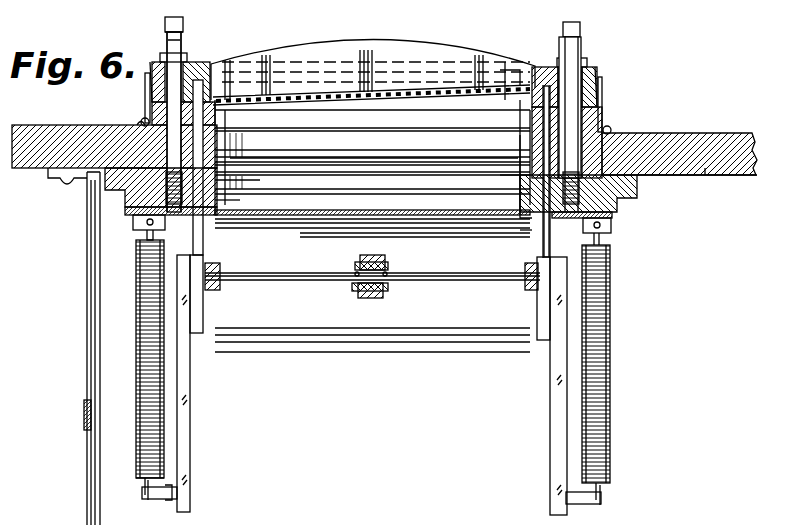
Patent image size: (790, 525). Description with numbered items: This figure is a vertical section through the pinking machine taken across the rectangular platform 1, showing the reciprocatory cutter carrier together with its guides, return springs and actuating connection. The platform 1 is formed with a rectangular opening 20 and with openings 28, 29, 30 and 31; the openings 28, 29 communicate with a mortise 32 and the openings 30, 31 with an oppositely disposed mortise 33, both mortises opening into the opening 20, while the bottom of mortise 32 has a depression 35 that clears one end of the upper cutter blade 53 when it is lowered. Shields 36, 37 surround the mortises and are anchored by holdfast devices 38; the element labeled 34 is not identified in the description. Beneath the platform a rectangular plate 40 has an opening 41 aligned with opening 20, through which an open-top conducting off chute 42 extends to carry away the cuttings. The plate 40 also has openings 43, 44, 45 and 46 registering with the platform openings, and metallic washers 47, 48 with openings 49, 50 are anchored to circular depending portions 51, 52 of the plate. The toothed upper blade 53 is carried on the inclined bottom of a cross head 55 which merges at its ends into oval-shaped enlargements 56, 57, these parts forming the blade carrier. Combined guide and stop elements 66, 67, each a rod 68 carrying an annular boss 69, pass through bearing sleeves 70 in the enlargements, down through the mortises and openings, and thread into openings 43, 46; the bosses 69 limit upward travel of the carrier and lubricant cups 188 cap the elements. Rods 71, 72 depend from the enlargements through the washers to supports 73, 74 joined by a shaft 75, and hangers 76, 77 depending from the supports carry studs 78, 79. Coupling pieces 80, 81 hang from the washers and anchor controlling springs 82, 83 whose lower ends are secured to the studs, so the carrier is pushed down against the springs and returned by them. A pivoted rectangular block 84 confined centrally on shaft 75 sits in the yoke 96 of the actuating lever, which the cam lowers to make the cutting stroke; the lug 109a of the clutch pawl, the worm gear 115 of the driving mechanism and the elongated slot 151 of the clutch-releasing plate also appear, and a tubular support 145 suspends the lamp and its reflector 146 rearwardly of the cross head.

The platform 1 is at (704, 180).
The rectangular opening 20 is at (470, 138).
The opening 28 is at (150, 128).
The opening 29 is at (372, 141).
The opening 30 is at (602, 128).
The opening 31 is at (545, 147).
The mortise 32 is at (150, 110).
The mortise 33 is at (602, 100).
The clamping block 34 is at (196, 62).
The depression 35 is at (266, 58).
The shield 36 is at (145, 78).
The shield 37 is at (550, 135).
The holdfast devices 38 is at (142, 118).
The rectangular plate 40 is at (640, 190).
The opening 41 is at (500, 172).
The conducting off chute 42 is at (234, 200).
The threaded opening 43 is at (125, 190).
The opening 44 is at (237, 175).
The opening 45 is at (520, 188).
The threaded opening 46 is at (640, 186).
The metallic washer 47 is at (133, 218).
The metallic washer 48 is at (615, 220).
The opening 49 is at (140, 258).
The opening 50 is at (520, 240).
The circular depending portion 51 is at (128, 210).
The circular depending portion 52 is at (617, 213).
The upper cutter blade 53 is at (440, 97).
The cross head 55 is at (432, 48).
The oval-shaped enlargement 56 is at (212, 62).
The oval-shaped enlargement 57 is at (535, 66).
The combined guide and stop element 66 is at (167, 62).
The combined guide and stop element 67 is at (563, 41).
The rod 68 is at (167, 38).
The annular boss 69 is at (184, 53).
The bearing sleeve 70 is at (152, 70).
The rod 71 is at (265, 222).
The rod 72 is at (520, 147).
The depending support 73 is at (200, 333).
The depending support 74 is at (540, 340).
The shaft 75 is at (322, 277).
The hanger 76 is at (190, 448).
The hanger 77 is at (550, 428).
The stud 78 is at (165, 499).
The stud 79 is at (588, 504).
The coupling piece 80 is at (145, 226).
The coupling piece 81 is at (583, 228).
The controlling spring 82 is at (136, 340).
The controlling spring 83 is at (610, 368).
The pivoted rectangular block 84 is at (385, 262).
The yoke 96 is at (370, 298).
The upstanding lug 109a is at (225, 511).
The worm gear 115 is at (299, 518).
The tubular support 145 is at (210, 100).
The reflector 146 is at (352, 55).
The elongated slot 151 is at (273, 524).
The lubricant cup 188 is at (165, 22).